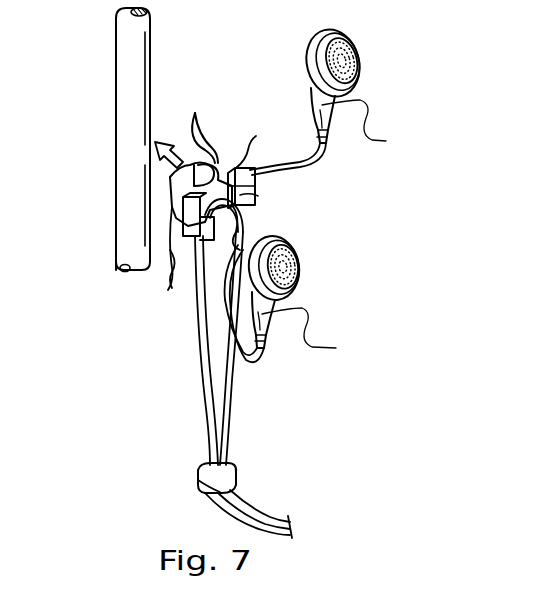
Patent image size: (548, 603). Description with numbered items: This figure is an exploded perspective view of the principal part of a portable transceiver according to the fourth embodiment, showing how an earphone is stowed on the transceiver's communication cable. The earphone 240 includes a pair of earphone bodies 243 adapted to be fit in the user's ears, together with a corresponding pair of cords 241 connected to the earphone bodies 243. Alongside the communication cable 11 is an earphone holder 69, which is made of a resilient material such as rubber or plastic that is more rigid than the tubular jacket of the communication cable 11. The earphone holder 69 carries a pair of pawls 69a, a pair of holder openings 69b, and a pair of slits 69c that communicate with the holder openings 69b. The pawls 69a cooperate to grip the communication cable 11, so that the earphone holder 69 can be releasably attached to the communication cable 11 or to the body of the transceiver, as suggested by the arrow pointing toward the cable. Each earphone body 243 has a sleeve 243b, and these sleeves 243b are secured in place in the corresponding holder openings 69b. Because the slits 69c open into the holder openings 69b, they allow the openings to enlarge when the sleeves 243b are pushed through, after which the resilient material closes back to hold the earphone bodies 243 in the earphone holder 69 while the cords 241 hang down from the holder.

The communication cable 11 is at (116, 156).
The earphone holder 69 is at (175, 180).
The pawls 69a is at (196, 112).
The holder openings 69b is at (211, 212).
The slits 69c is at (248, 192).
The earphone 240 is at (236, 444).
The cords 241 is at (200, 384).
The earphone bodies 243 is at (356, 40).
The sleeves 243b is at (356, 233).